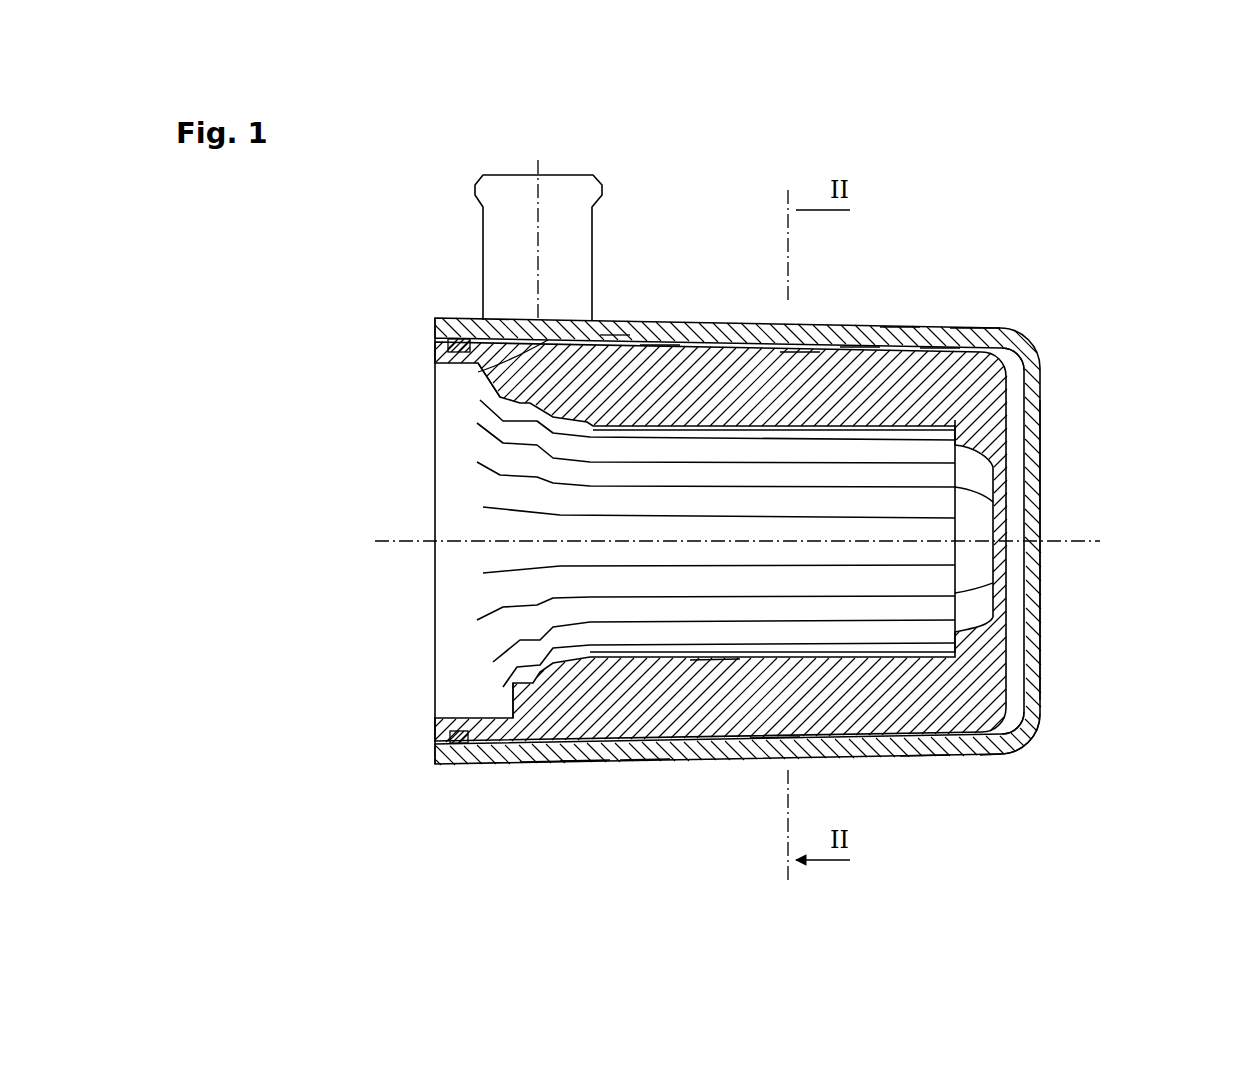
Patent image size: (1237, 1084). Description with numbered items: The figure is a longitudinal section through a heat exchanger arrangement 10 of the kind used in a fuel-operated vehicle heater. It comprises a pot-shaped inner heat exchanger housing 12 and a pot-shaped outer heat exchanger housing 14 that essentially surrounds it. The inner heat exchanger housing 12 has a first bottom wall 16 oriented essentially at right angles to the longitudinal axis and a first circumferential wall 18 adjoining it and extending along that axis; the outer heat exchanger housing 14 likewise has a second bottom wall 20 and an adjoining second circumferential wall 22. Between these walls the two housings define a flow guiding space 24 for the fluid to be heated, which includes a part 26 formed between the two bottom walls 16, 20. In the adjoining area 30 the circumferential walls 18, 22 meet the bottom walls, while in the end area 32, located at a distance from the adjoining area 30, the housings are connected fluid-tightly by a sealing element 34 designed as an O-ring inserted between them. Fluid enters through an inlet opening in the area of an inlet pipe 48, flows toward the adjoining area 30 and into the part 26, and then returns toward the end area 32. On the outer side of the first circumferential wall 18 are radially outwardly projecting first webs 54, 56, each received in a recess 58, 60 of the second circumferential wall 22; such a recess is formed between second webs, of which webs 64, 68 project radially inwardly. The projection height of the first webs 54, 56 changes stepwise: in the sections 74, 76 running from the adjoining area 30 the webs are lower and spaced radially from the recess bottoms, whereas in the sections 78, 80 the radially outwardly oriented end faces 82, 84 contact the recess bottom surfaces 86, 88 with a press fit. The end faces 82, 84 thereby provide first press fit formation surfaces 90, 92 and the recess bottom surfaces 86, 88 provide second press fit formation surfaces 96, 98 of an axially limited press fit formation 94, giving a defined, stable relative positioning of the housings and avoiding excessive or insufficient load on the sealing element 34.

The heat exchanger arrangement 10 is at (1094, 158).
The inner heat exchanger housing 12 is at (1003, 343).
The outer heat exchanger housing 14 is at (973, 330).
The first bottom wall 16 is at (1003, 522).
The first circumferential wall 18 is at (738, 352).
The second bottom wall 20 is at (1034, 595).
The second circumferential wall 22 is at (898, 348).
The flow guiding space 24 is at (1032, 748).
The part of the flow space 26 is at (1018, 457).
The adjoining area 30 is at (995, 784).
The end area 32 is at (613, 804).
The sealing element 34 is at (448, 345).
The inlet pipe 48 is at (483, 233).
The first web 54 is at (802, 352).
The first web 56 is at (713, 740).
The recess 58 is at (942, 349).
The recess 60 is at (927, 740).
The second web 64 is at (1010, 358).
The second web 68 is at (1030, 716).
The section of first web 74 is at (858, 348).
The section of first web 76 is at (777, 740).
The section of first web 78 is at (660, 350).
The section of first web 80 is at (647, 760).
The end face 82 is at (615, 340).
The end face 84 is at (583, 760).
The recess bottom surface 86 is at (478, 360).
The recess bottom surface 88 is at (553, 743).
The first press fit formation surface 90 is at (577, 318).
The first press fit formation surface 92 is at (547, 771).
The press fit formation 94 is at (428, 294).
The second press fit formation surface 96 is at (478, 372).
The second press fit formation surface 98 is at (497, 737).